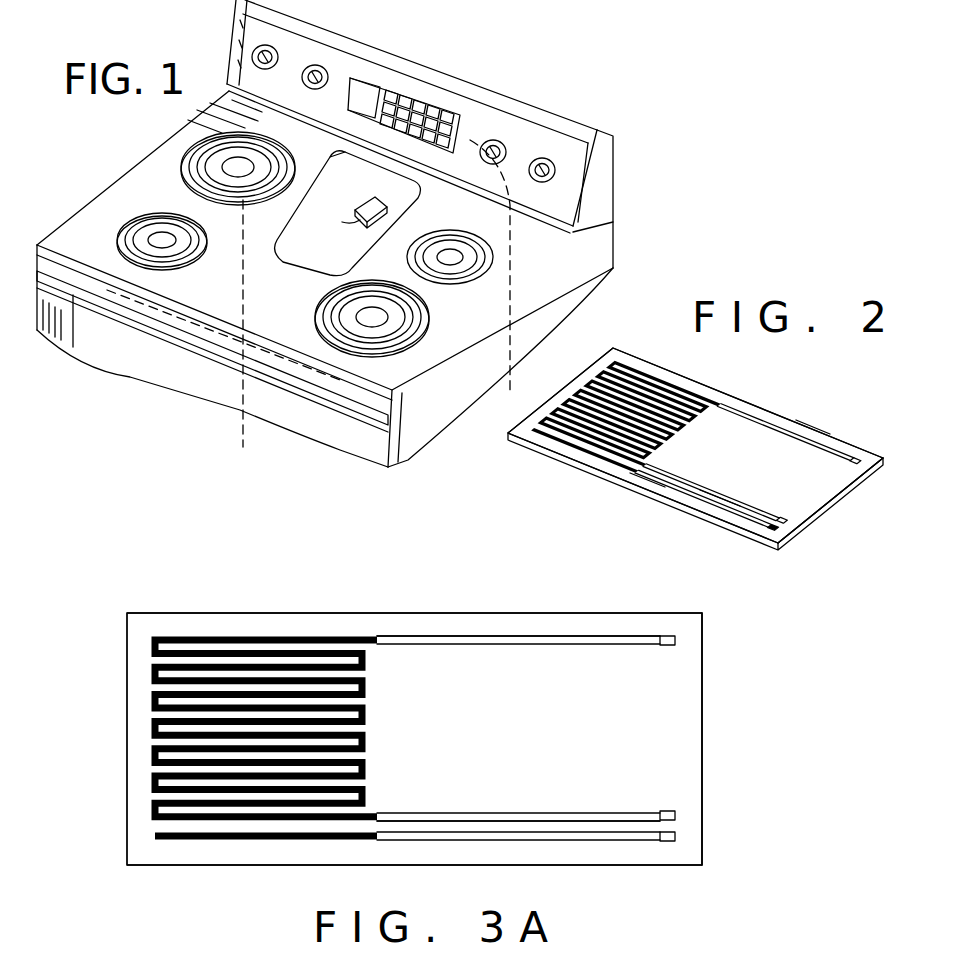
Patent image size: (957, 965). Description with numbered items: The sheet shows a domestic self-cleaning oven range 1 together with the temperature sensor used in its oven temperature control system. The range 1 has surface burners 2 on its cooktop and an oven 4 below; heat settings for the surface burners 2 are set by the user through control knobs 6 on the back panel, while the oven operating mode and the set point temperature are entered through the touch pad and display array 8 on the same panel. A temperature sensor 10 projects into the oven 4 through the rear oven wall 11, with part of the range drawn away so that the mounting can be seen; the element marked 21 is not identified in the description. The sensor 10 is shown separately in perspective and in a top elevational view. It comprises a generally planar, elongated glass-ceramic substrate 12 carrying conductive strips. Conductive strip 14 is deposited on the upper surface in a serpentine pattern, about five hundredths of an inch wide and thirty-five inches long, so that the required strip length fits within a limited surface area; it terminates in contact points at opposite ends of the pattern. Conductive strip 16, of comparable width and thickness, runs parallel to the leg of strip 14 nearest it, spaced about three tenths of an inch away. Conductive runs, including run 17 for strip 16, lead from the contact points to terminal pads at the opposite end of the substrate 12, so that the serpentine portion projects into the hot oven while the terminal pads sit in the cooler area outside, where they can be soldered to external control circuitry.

In FIG. 1, the domestic self-cleaning oven range 1 is at (631, 193).
In FIG. 1, the surface burners 2 is at (183, 166).
In FIG. 1, the oven 4 is at (493, 342).
In FIG. 1, the control knobs 6 is at (265, 69).
In FIG. 1, the touch pad and display array 8 is at (412, 96).
In FIG. 1, the temperature sensor 10 is at (342, 222).
In FIG. 2, the temperature sensor 10 is at (668, 360).
In FIG. 3A, the temperature sensor 10 is at (318, 602).
In FIG. 1, the rear oven wall 11 is at (353, 170).
In FIG. 2, the glass-ceramic substrate 12 is at (823, 508).
In FIG. 3A, the glass-ceramic substrate 12 is at (703, 688).
In FIG. 2, the conductive strip 14 is at (693, 417).
In FIG. 3A, the conductive strip 14 is at (367, 723).
In FIG. 2, the conductive strip 16 is at (585, 447).
In FIG. 3A, the conductive strip 16 is at (282, 840).
In FIG. 2, the conductive run 17 is at (708, 497).
In FIG. 3A, the conductive run 17 is at (497, 840).
In FIG. 1, the switch 21 is at (373, 220).